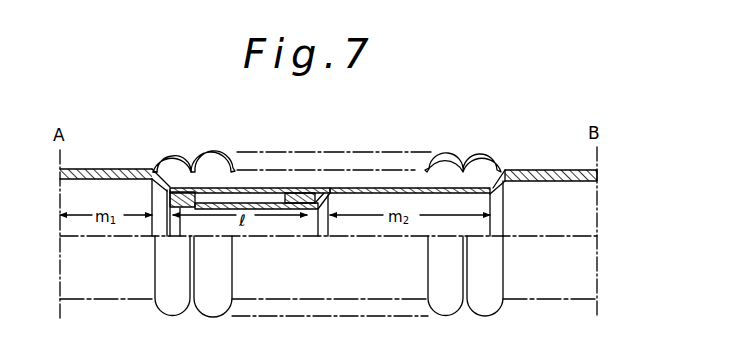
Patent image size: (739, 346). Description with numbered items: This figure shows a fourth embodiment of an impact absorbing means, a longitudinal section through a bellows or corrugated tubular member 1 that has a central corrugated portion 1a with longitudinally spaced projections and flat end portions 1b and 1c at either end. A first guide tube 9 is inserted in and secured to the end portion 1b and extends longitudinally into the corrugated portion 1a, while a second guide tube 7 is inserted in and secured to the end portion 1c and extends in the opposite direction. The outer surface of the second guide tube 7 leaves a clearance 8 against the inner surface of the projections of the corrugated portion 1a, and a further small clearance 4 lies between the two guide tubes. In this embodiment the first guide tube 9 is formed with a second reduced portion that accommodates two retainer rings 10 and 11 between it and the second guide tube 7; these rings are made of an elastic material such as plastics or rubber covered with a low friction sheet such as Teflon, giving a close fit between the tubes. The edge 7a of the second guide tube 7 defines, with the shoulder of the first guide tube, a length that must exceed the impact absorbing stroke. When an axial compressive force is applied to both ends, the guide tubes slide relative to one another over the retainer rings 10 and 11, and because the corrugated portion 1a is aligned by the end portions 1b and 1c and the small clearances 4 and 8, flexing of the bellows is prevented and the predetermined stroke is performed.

The bellows or corrugated tubular member 1 is at (87, 164).
The corrugated portion 1a is at (214, 158).
The end portion 1b is at (531, 170).
The end portion 1c is at (122, 168).
The clearance 4 is at (447, 160).
The second guide tube 7 is at (273, 189).
The edge of the second guide tube 7a is at (332, 197).
The clearance 8 is at (192, 172).
The first guide tube 9 is at (388, 189).
The retainer ring 10 is at (178, 187).
The retainer ring 11 is at (300, 196).